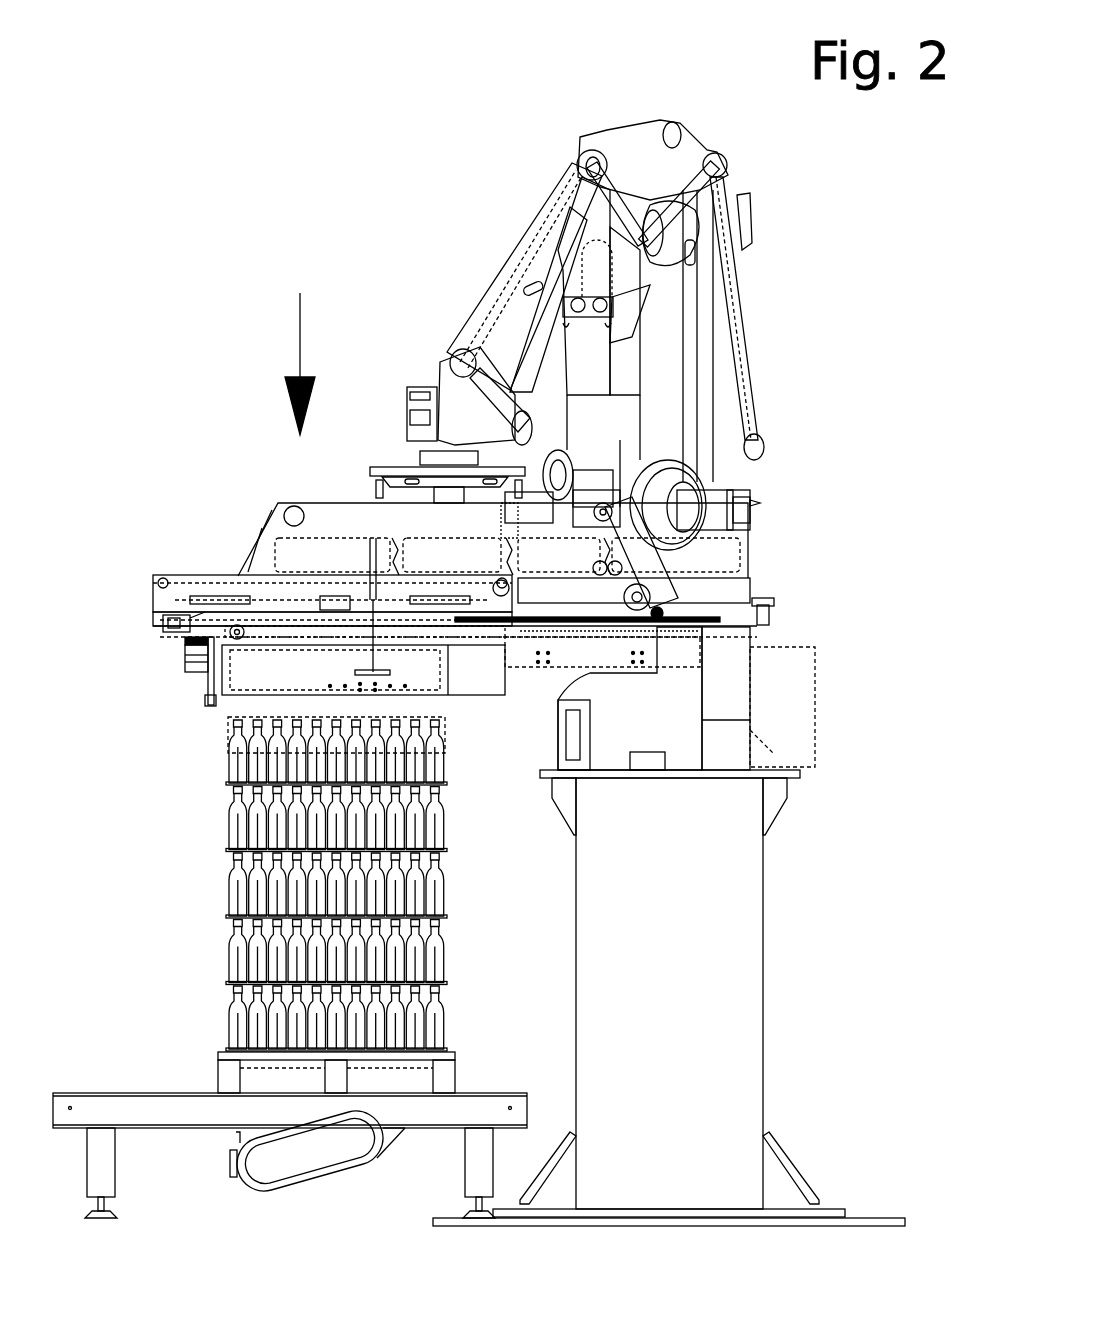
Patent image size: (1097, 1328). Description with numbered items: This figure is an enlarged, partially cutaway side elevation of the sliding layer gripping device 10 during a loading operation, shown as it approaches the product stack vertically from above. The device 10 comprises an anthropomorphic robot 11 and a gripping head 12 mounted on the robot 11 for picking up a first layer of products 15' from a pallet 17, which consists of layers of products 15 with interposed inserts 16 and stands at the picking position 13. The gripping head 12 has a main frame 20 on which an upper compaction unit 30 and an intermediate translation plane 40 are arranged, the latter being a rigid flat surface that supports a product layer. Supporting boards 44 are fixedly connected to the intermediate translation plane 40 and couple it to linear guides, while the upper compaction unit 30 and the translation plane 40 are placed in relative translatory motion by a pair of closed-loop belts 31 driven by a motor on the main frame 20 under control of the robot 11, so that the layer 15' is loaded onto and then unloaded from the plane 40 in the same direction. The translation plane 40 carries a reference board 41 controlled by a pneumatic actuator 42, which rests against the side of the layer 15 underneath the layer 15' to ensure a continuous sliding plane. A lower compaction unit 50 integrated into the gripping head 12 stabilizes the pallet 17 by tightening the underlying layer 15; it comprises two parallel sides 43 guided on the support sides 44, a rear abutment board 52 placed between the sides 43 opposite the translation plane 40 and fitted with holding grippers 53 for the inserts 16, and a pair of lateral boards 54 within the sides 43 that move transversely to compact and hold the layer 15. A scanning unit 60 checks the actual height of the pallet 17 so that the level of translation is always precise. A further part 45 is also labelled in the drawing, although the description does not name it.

The sliding layer gripping device 10 is at (730, 105).
The anthropomorphic robot 11 is at (530, 218).
The gripping head 12 is at (262, 526).
The picking position 13 is at (192, 1110).
The layer of products 15 is at (296, 884).
The first layer of products 15' is at (285, 769).
The inserts 16 is at (228, 850).
The pallet 17 is at (215, 912).
The main frame 20 is at (327, 512).
The upper compaction unit 30 is at (150, 604).
The belts 31 is at (640, 573).
The intermediate translation plane 40 is at (720, 620).
The reference board 41 is at (462, 690).
The pneumatic actuator 42 is at (655, 637).
The parallel sides 43 is at (183, 665).
The supporting boards 44 is at (693, 650).
The drive roller 45 is at (253, 622).
The lower compaction unit 50 is at (195, 680).
The rear abutment board 52 is at (207, 702).
The holding grippers 53 is at (183, 628).
The lateral boards 54 is at (497, 683).
The scanning unit 60 is at (360, 655).